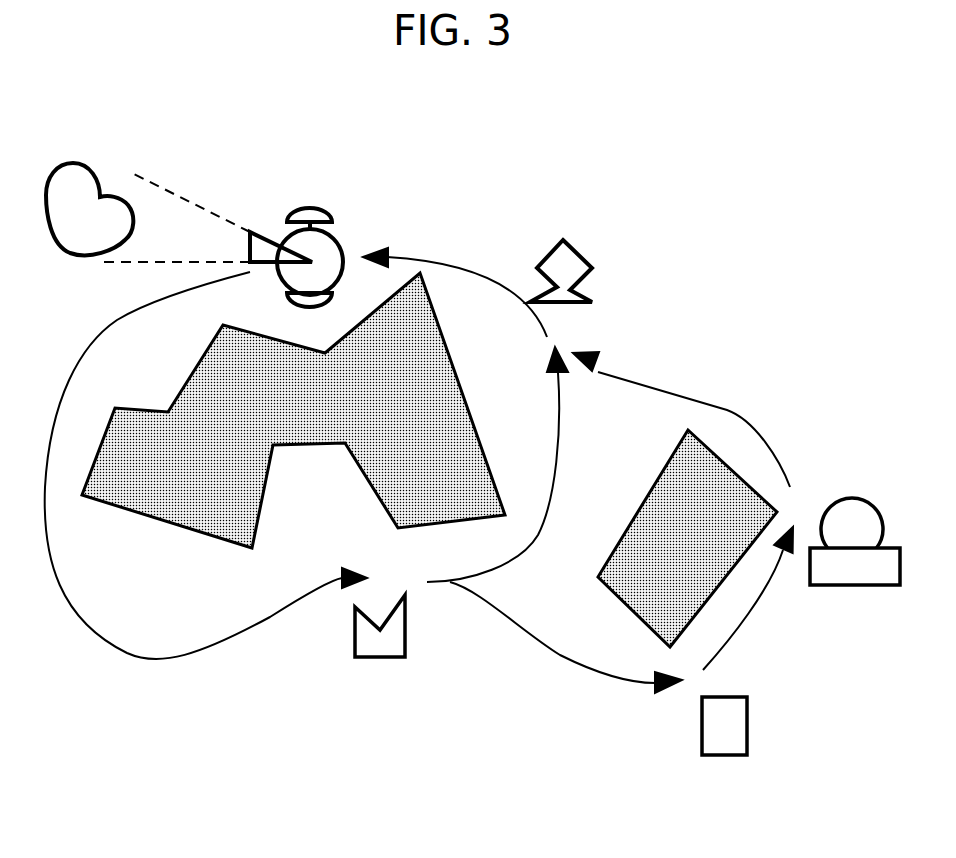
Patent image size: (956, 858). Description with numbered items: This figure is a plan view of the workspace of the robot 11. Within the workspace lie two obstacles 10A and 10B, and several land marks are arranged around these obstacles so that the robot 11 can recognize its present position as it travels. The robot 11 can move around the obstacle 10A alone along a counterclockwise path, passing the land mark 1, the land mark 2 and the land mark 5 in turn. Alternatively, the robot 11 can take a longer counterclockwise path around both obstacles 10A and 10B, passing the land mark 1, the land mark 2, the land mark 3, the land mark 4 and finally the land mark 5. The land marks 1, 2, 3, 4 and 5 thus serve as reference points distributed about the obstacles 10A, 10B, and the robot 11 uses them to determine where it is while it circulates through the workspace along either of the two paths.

The land mark 1 is at (98, 168).
The robot 11 is at (315, 208).
The land mark 5 is at (573, 240).
The obstacle 10A is at (157, 520).
The obstacle 10B is at (638, 508).
The land mark 2 is at (377, 658).
The land mark 3 is at (725, 757).
The land mark 4 is at (853, 587).